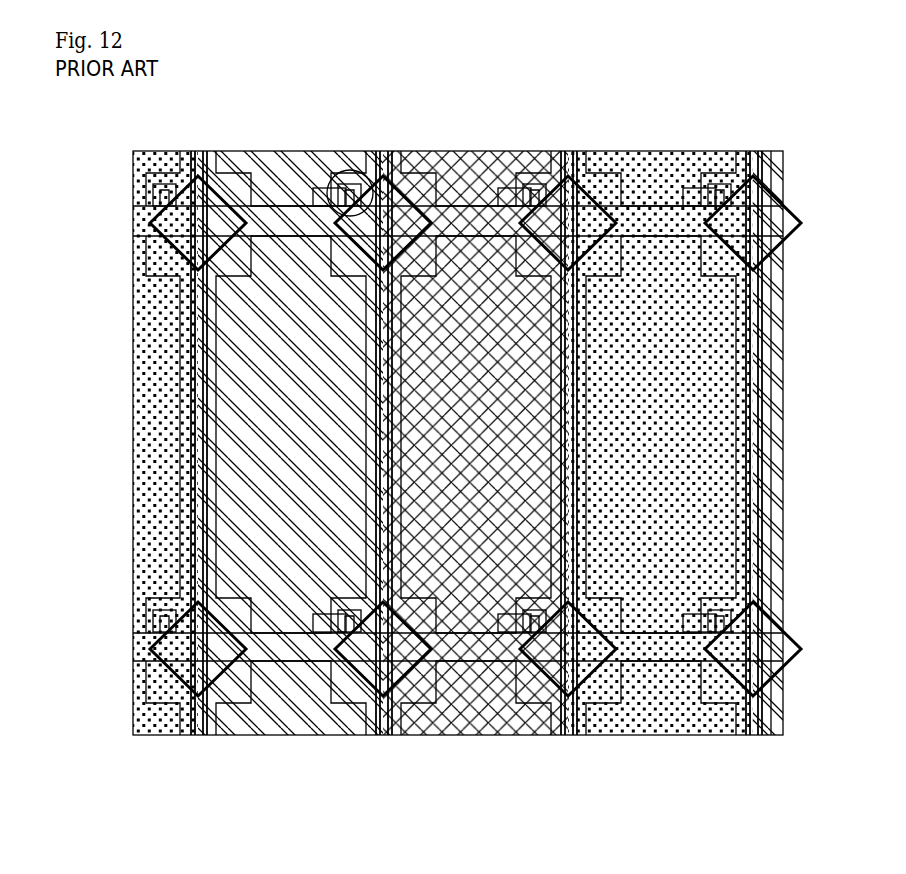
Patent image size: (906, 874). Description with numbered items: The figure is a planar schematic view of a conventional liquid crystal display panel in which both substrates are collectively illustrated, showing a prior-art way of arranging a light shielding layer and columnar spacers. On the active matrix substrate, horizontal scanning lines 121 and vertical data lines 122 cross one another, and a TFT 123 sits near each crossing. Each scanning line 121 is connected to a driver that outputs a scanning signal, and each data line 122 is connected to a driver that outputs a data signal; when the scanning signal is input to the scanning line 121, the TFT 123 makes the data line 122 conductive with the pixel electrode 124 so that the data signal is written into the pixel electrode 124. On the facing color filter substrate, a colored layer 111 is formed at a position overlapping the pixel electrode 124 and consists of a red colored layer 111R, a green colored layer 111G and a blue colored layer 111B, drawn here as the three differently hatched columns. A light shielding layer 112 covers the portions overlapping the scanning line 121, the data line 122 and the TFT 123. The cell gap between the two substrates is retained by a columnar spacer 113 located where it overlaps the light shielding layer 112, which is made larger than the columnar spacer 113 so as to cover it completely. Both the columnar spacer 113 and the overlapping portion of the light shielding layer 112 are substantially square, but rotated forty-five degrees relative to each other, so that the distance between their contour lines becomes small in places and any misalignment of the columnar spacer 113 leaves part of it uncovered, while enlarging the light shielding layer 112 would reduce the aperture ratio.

The colored layer 111 is at (405, 494).
The blue colored layer 111B is at (220, 471).
The red colored layer 111R is at (455, 600).
The green colored layer 111G is at (660, 471).
The light shielding layer 112 is at (150, 683).
The columnar spacer 113 is at (203, 682).
The scanning line 121 is at (135, 216).
The data line 122 is at (191, 148).
The TFT 123 is at (346, 164).
The pixel electrode 124 is at (258, 347).